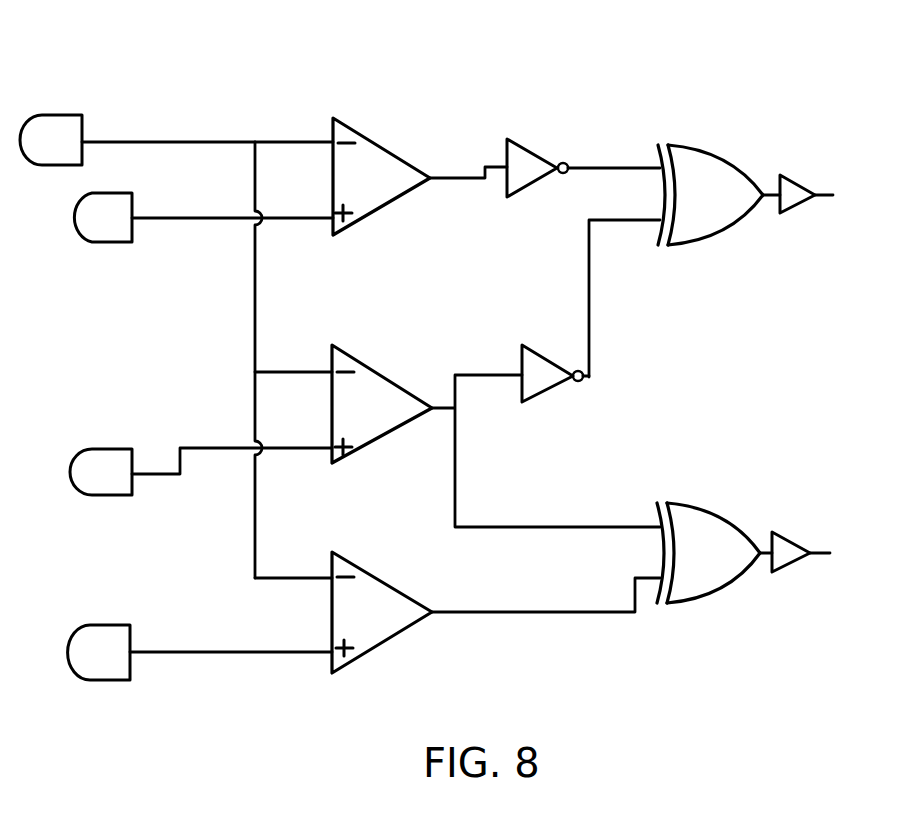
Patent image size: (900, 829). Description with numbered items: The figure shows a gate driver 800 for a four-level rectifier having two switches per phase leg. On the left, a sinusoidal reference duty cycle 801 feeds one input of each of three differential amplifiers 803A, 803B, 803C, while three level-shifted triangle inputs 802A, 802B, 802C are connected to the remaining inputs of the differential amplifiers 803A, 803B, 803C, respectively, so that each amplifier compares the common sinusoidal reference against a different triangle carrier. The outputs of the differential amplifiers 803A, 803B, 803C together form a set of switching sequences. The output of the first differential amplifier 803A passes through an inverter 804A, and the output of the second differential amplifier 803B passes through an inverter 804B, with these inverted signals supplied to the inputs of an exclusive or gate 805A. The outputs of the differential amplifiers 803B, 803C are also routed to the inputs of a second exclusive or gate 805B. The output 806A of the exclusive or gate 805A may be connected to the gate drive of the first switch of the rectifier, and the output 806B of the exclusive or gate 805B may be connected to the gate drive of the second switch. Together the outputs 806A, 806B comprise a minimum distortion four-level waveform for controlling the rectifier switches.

The gate driver 800 is at (186, 299).
The sinusoidal reference duty cycle 801 is at (176, 140).
The level-shifted triangle input 802A is at (203, 217).
The level-shifted triangle input 802B is at (201, 471).
The level-shifted triangle input 802C is at (200, 652).
The differential amplifier 803A is at (420, 176).
The differential amplifier 803B is at (496, 436).
The differential amplifier 803C is at (496, 612).
The inverter 804A is at (583, 168).
The inverter 804B is at (555, 373).
The exclusive or (XOR) gate 805A is at (684, 261).
The XOR gate 805B is at (714, 553).
The output 806A is at (828, 194).
The output 806B is at (823, 552).